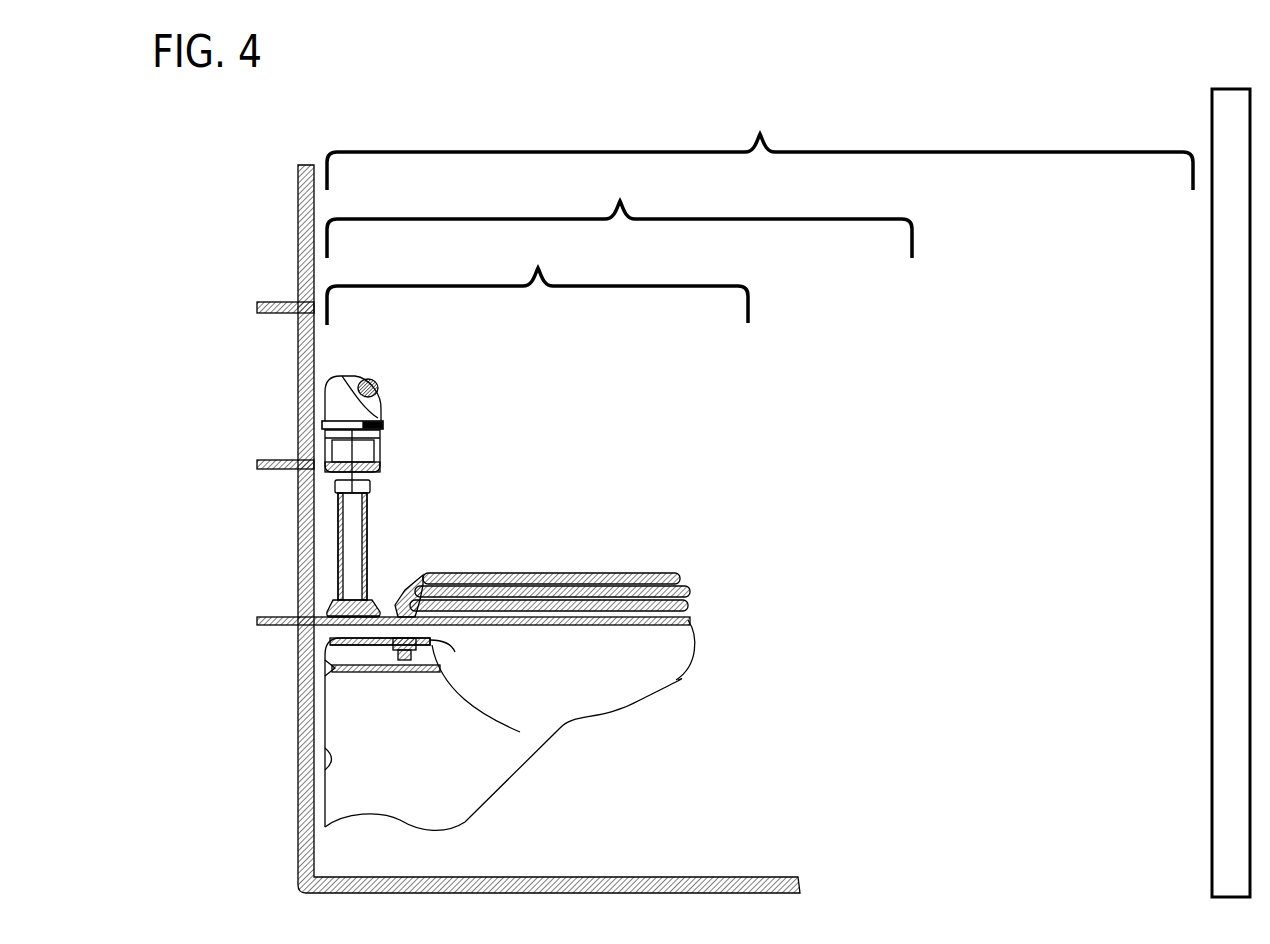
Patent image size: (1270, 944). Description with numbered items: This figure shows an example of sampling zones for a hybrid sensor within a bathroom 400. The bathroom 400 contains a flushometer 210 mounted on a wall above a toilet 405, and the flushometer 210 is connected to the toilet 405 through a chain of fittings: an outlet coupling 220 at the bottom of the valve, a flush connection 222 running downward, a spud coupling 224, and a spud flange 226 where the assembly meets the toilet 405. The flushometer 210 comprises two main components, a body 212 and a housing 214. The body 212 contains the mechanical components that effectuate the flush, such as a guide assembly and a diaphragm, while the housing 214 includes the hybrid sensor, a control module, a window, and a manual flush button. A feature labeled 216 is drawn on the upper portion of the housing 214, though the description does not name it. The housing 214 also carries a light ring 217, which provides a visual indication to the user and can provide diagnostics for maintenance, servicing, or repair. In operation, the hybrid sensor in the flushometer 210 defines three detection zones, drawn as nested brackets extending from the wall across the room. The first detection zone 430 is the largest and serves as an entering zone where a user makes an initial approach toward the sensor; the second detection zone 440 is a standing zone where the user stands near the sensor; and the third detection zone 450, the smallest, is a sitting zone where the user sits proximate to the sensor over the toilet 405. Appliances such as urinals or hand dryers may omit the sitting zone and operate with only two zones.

The bathroom 400 is at (1139, 99).
The first detection zone 430 is at (760, 146).
The second detection zone 440 is at (619, 214).
The third detection zone 450 is at (537, 281).
The flushometer 210 is at (303, 372).
The housing 214 is at (352, 380).
The sensor 216 is at (375, 389).
The light ring 217 is at (383, 425).
The body 212 is at (383, 460).
The outlet coupling 220 is at (335, 487).
The flush connection 222 is at (338, 538).
The spud coupling 224 is at (335, 596).
The spud flange 226 is at (330, 613).
The toilet 405 is at (675, 676).